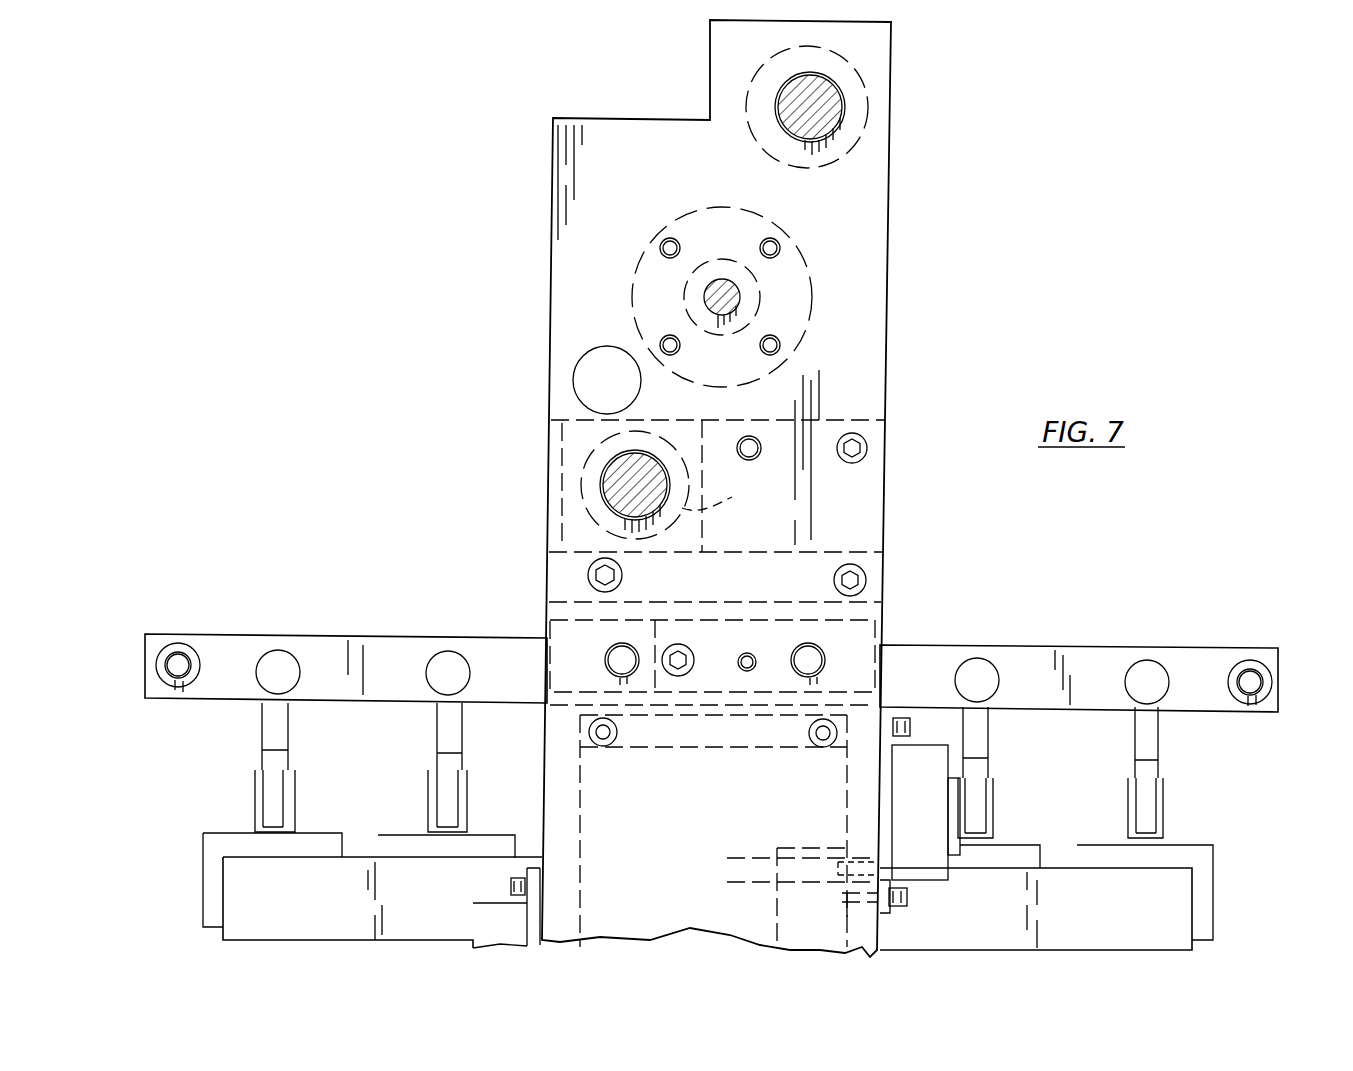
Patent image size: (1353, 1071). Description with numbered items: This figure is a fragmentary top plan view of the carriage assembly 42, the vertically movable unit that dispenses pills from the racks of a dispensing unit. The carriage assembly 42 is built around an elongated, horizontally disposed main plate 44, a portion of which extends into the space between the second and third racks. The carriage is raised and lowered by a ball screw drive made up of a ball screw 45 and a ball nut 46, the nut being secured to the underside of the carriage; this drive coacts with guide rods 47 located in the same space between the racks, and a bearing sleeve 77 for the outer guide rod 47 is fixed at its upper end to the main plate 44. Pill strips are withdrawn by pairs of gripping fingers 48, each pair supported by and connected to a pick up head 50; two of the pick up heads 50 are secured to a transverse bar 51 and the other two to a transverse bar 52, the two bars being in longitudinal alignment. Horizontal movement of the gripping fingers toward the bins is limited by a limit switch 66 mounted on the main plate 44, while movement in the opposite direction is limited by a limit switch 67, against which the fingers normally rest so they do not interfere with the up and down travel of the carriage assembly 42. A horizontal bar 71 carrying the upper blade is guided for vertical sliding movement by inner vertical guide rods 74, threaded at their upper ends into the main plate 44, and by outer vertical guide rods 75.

The carriage assembly 42 is at (488, 581).
The main plate 44 is at (877, 323).
The ball screw 45 is at (707, 300).
The ball nut 46 is at (800, 252).
The guide rods 47 is at (822, 110).
The gripping fingers 48 is at (263, 725).
The pick up head 50 is at (390, 842).
The transverse bar 51 is at (300, 904).
The transverse bar 52 is at (1140, 914).
The limit switch 66 is at (905, 804).
The limit switch 67 is at (492, 912).
The horizontal bar 71 is at (1033, 657).
The inner vertical guide rods 74 is at (620, 657).
The outer vertical guide rods 75 is at (173, 668).
The bearing sleeve 77 is at (720, 498).